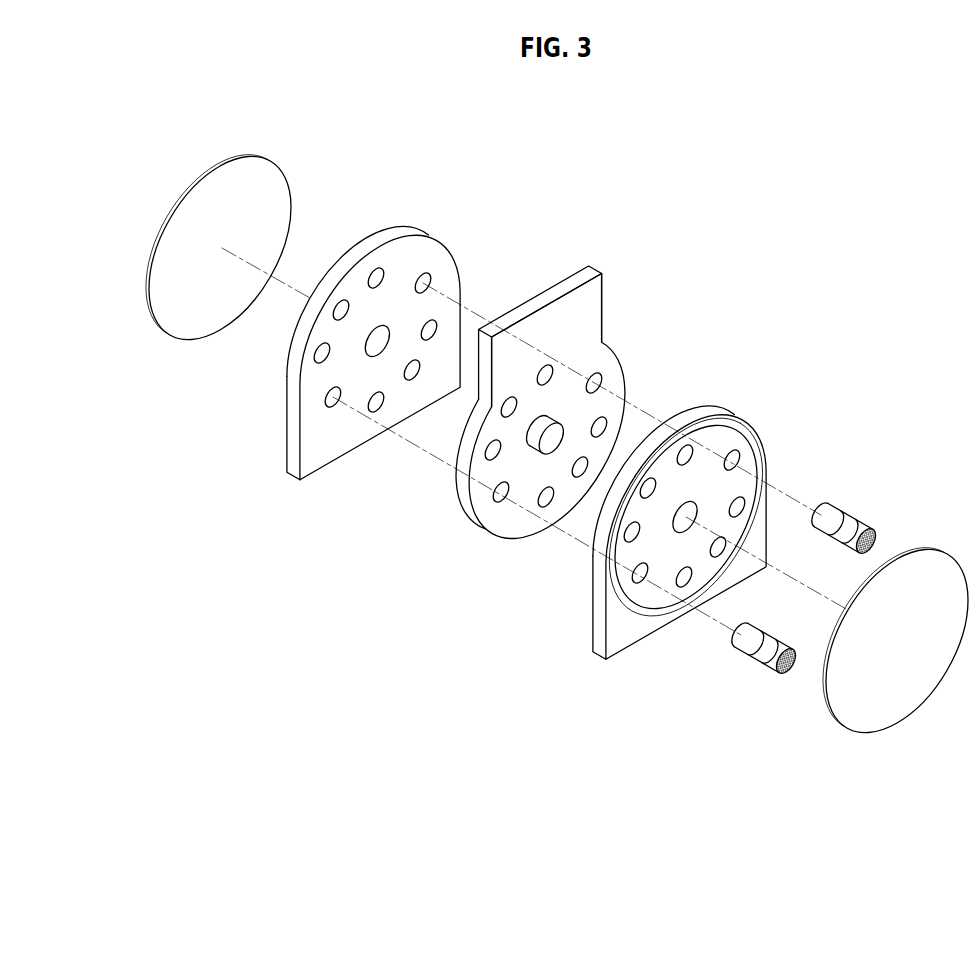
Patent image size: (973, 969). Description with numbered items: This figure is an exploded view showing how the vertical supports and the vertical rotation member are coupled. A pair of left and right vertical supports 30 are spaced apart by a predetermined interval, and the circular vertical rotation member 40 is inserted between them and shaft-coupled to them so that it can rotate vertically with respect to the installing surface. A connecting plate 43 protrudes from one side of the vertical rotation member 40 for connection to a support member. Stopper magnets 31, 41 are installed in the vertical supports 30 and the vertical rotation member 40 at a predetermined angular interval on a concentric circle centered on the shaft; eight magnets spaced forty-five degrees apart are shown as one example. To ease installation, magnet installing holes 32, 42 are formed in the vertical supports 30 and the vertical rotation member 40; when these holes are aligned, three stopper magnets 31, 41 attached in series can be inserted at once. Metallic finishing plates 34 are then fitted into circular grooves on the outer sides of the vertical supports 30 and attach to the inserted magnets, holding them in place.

The vertical support 30 is at (499, 456).
The stopper magnet 31 is at (758, 633).
The magnet installing hole 32 is at (428, 280).
The finishing plate 34 is at (262, 204).
The vertical rotation member 40 is at (570, 385).
The stopper magnet 41 is at (753, 653).
The magnet installing hole 42 is at (503, 490).
The connecting plate 43 is at (567, 284).